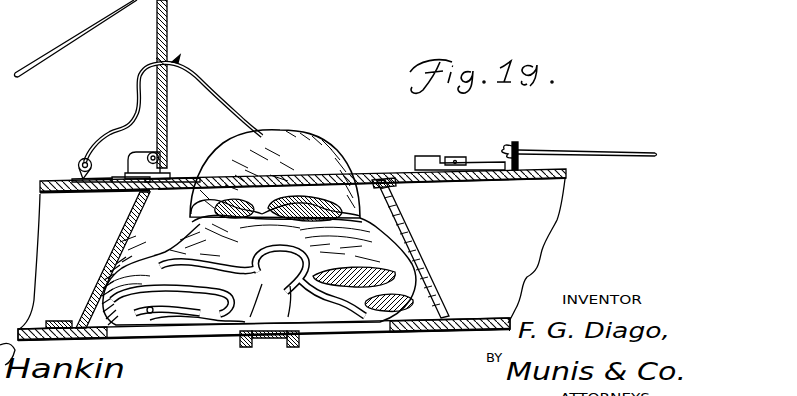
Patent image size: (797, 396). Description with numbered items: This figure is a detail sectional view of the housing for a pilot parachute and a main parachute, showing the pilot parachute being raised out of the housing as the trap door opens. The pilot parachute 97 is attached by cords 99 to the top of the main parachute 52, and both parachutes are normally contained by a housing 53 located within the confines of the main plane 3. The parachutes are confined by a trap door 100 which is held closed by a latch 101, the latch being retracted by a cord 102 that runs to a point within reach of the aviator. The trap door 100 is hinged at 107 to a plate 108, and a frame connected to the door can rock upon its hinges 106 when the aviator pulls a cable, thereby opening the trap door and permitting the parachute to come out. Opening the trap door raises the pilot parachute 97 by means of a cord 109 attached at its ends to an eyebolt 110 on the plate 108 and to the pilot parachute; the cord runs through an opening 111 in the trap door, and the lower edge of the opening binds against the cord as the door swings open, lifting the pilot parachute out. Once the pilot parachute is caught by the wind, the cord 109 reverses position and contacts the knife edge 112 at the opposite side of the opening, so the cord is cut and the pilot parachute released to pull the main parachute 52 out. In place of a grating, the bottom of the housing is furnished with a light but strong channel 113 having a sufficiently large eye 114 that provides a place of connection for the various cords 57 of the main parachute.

The main plane 3 is at (70, 197).
The main parachute 52 is at (420, 256).
The housing 53 is at (399, 215).
The cords of the main parachute 57 is at (200, 324).
The pilot parachute 97 is at (301, 132).
The cords 99 is at (300, 198).
The trap door 100 is at (168, 24).
The latch 101 is at (421, 155).
The cord 102 is at (553, 150).
The hinges 106 is at (313, 5).
The hinge 107 is at (163, 153).
The plate 108 is at (74, 179).
The cord 109 is at (222, 84).
The eyebolt 110 is at (85, 158).
The opening 111 is at (182, 60).
The knife edge 112 is at (156, 62).
The channel 113 is at (246, 348).
The eye 114 is at (290, 340).